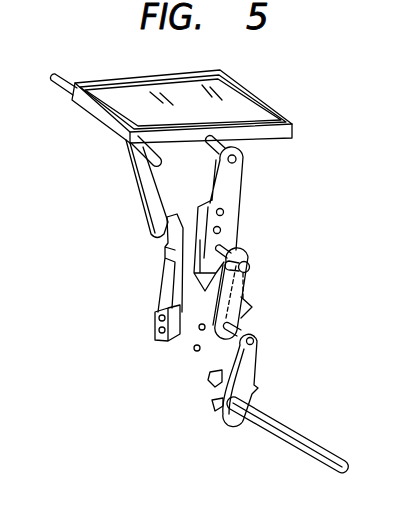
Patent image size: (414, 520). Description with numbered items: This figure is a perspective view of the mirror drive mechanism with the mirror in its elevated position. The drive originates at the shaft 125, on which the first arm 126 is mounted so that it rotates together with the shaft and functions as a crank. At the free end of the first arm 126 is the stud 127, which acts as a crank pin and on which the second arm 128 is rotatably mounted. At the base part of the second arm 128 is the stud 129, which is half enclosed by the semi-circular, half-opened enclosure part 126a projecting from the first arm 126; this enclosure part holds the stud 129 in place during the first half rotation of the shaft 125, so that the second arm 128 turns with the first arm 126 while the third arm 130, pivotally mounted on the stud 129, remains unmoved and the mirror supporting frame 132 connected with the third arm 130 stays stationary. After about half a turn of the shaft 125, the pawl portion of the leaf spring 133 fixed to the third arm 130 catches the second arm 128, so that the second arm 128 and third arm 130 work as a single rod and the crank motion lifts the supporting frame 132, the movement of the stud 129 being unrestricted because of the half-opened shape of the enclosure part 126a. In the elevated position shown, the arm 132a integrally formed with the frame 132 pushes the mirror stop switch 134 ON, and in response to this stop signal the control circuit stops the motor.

The shaft 125 is at (302, 436).
The first arm 126 is at (247, 368).
The enclosure part 126a is at (215, 372).
The stud 127 is at (242, 328).
The second arm 128 is at (250, 287).
The stud 129 is at (250, 267).
The third arm 130 is at (230, 192).
The mirror supporting frame 132 is at (184, 145).
The arm 132a is at (158, 222).
The leaf spring 133 is at (195, 346).
The mirror stop switch 134 is at (156, 318).